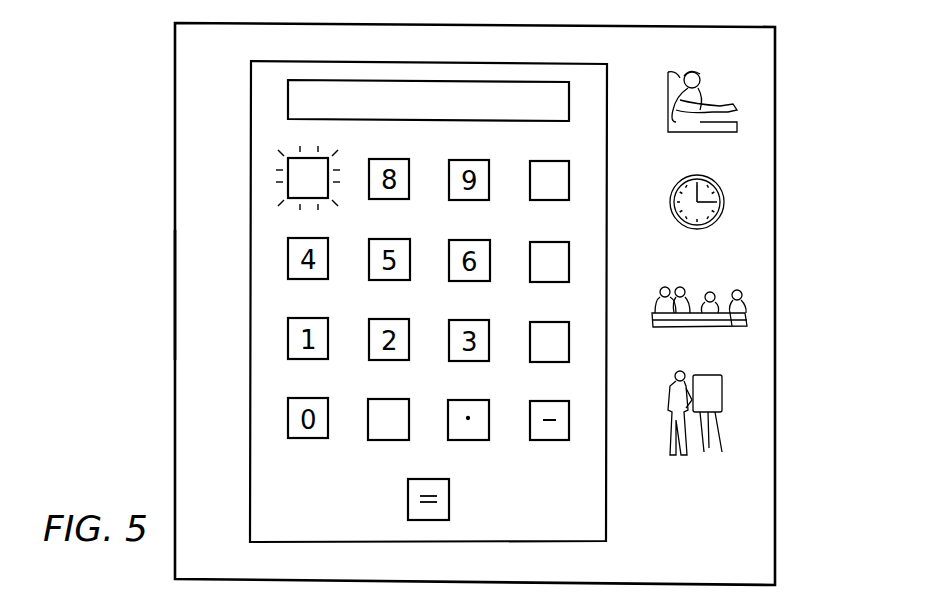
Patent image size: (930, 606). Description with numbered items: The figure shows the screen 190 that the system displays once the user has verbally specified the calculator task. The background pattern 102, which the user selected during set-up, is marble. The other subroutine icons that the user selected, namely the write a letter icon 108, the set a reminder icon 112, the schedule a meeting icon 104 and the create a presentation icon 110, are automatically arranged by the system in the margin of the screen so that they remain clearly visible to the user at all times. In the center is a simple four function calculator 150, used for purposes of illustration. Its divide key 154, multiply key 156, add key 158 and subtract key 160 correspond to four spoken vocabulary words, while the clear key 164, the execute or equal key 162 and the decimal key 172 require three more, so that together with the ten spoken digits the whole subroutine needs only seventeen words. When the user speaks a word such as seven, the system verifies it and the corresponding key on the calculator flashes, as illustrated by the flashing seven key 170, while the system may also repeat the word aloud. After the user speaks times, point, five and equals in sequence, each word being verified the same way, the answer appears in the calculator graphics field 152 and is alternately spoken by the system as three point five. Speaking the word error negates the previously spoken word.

The background pattern 102 is at (196, 333).
The screen 190 is at (170, 293).
The four function calculator 150 is at (240, 391).
The calculator graphics field 152 is at (422, 95).
The flashing seven key 170 is at (288, 178).
The divide key 154 is at (547, 201).
The multiply key 156 is at (549, 283).
The add key 158 is at (547, 363).
The subtract key 160 is at (549, 441).
The equal key 162 is at (408, 511).
The clear key 164 is at (369, 428).
The decimal key 172 is at (473, 441).
The write a letter icon 108 is at (737, 105).
The set a reminder icon 112 is at (732, 205).
The schedule a meeting icon 104 is at (748, 315).
The create a presentation icon 110 is at (725, 420).